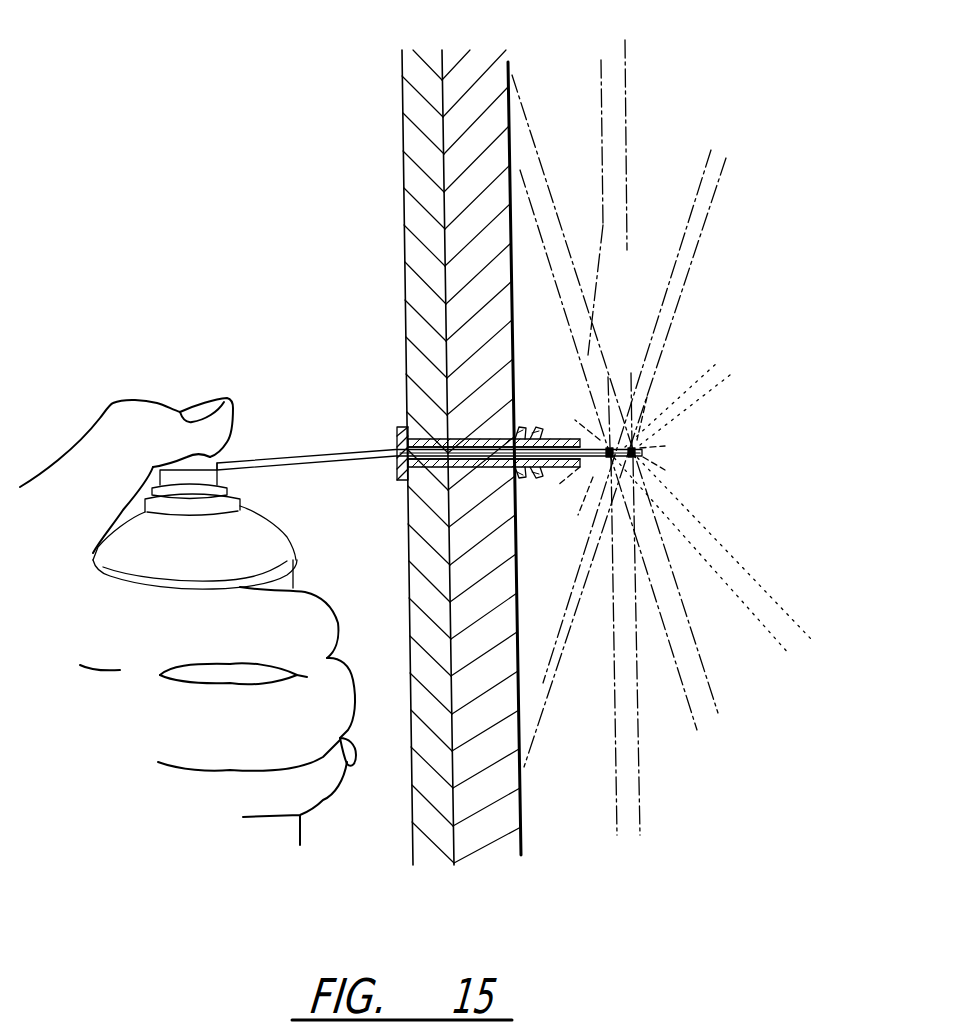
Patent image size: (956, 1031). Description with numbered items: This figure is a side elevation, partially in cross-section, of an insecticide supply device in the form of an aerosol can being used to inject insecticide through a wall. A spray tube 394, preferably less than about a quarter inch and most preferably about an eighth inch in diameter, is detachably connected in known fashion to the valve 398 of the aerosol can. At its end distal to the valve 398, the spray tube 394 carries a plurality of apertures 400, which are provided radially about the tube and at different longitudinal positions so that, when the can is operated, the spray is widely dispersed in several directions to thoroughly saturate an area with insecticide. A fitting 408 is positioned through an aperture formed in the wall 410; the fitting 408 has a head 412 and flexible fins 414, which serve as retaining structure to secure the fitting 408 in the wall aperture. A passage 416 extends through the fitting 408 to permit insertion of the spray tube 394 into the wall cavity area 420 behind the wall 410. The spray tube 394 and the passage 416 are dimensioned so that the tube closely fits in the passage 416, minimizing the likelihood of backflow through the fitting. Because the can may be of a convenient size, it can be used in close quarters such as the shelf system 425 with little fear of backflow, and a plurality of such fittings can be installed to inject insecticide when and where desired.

The spray tube 394 is at (296, 463).
The valve 398 is at (200, 466).
The apertures 400 is at (610, 448).
The fittings 408 is at (478, 468).
The wall 410 is at (432, 435).
The head 412 is at (404, 440).
The flexible fins 414 is at (522, 430).
The passage 416 is at (450, 435).
The wall cavity area 420 is at (760, 306).
The shelf system 425 is at (406, 272).